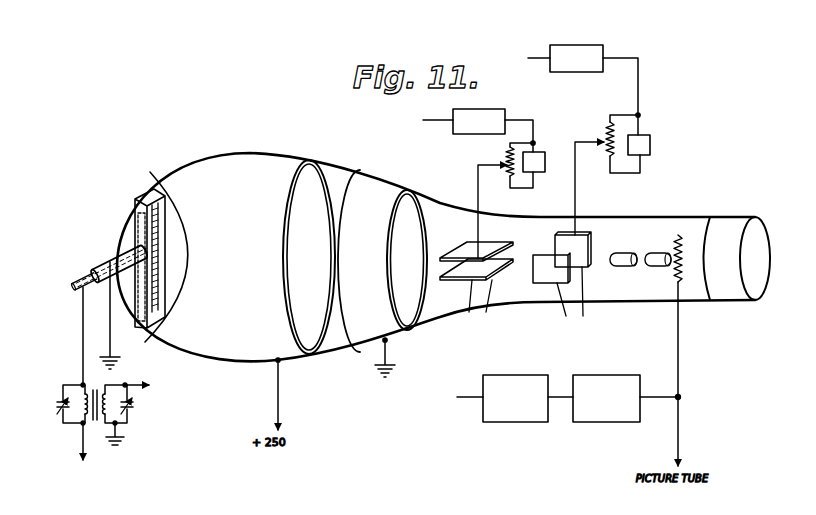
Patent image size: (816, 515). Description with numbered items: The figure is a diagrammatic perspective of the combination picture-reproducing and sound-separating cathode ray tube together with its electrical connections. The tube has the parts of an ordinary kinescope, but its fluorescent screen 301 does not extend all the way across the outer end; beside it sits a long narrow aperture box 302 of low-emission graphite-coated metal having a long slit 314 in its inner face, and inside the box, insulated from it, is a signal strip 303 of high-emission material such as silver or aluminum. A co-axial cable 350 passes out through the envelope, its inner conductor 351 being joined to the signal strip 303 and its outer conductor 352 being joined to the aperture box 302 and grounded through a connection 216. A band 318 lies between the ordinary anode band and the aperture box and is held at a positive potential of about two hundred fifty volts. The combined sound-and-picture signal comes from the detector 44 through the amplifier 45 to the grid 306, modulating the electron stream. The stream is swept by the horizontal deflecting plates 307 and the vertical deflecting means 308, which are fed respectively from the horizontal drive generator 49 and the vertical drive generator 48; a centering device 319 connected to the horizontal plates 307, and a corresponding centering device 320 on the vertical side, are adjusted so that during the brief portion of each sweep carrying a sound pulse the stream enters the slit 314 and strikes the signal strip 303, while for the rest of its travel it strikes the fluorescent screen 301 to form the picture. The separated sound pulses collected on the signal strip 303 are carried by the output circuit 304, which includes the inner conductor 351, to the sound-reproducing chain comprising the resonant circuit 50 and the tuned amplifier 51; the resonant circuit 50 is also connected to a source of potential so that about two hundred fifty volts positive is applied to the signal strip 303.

The fluorescent screen 301 is at (167, 180).
The band 318 is at (282, 167).
The aperture box 302 is at (137, 207).
The signal strip 303 is at (141, 222).
The slit 314 is at (152, 240).
The co-axial cable 350 is at (110, 260).
The inner conductor 351 is at (92, 278).
The outer conductor 352 is at (101, 285).
The output circuit 304 is at (83, 334).
The ground connection 216 is at (112, 351).
The resonant circuit 50 is at (132, 412).
The tuned amplifier 51 is at (183, 385).
The vertical drive generator 48 is at (493, 109).
The horizontal drive generator 49 is at (588, 45).
The centering device 320 is at (546, 154).
The centering device 319 is at (651, 143).
The grid 306 is at (680, 235).
The vertical deflecting means 308 is at (476, 252).
The horizontal deflecting plates 307 is at (568, 283).
The detector 44 is at (532, 363).
The amplifier 45 is at (607, 374).